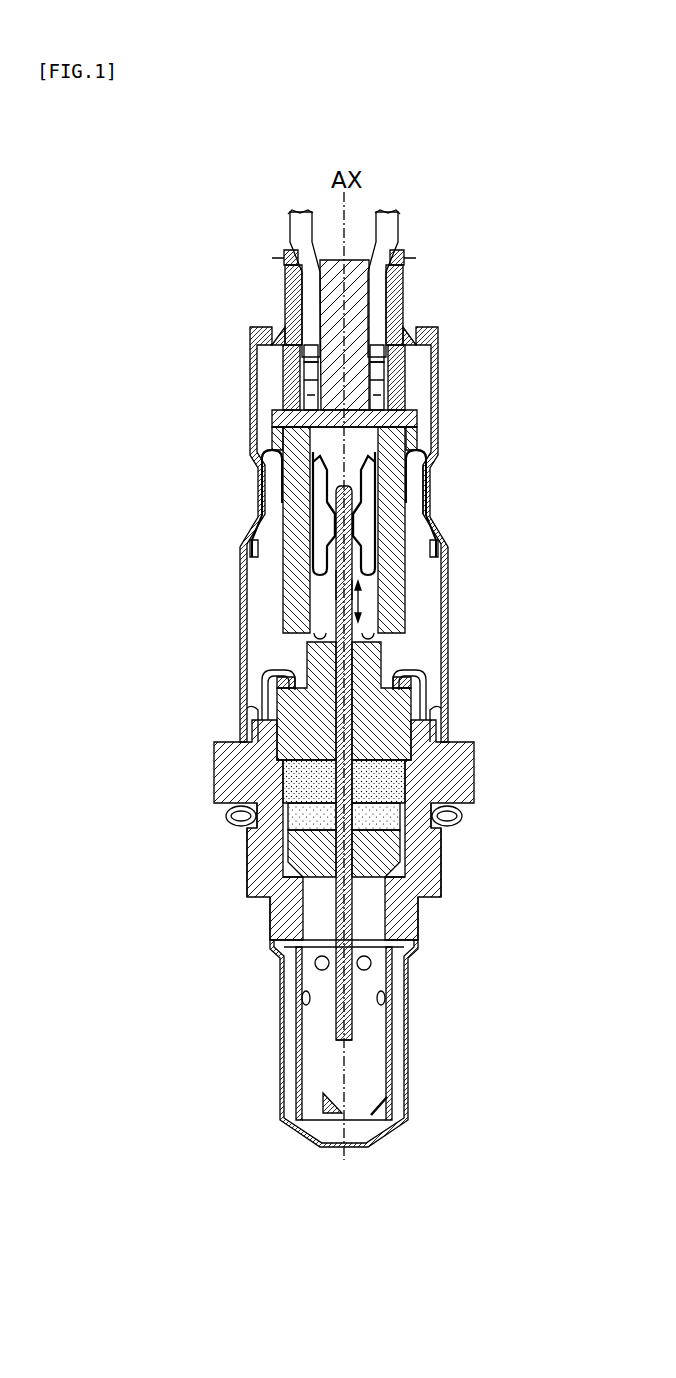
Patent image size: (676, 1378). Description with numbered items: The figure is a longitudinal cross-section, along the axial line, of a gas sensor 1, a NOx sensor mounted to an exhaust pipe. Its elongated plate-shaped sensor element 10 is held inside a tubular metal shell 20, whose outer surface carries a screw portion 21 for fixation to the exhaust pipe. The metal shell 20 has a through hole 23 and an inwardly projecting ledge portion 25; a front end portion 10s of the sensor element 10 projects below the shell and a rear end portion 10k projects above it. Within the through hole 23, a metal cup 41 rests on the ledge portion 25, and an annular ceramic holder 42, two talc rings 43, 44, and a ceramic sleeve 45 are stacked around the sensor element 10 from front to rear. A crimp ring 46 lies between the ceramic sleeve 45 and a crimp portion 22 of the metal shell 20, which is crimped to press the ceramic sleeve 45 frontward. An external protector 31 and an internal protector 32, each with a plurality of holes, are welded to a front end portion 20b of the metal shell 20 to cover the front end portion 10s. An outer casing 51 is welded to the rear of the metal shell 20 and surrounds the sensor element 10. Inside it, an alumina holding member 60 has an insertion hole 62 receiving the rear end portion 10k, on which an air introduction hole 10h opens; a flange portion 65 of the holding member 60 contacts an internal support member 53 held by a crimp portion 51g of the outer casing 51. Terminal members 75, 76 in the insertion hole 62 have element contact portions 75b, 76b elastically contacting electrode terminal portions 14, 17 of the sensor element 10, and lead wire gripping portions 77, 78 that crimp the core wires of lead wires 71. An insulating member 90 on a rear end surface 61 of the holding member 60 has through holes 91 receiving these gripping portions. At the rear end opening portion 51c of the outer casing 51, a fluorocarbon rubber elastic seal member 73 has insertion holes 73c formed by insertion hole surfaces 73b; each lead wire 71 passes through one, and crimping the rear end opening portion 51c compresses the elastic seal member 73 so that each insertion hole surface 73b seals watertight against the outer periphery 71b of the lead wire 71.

The gas sensor 1 is at (481, 222).
The sensor element 10 is at (245, 705).
The rear end portion 10k is at (335, 580).
The air introduction hole 10h is at (372, 596).
The front end portion 10s is at (336, 1032).
The electrode terminal portion 14 is at (330, 530).
The electrode terminal portion 17 is at (360, 532).
The metal shell 20 is at (236, 780).
The front end portion 20b is at (415, 912).
The screw portion 21 is at (258, 842).
The crimp portion 22 is at (400, 660).
The through hole 23 is at (278, 935).
The ledge portion 25 is at (262, 862).
The external protector 31 is at (408, 1010).
The internal protector 32 is at (392, 1068).
The metal cup 41 is at (295, 877).
The ceramic holder 42 is at (385, 855).
The talc ring 43 is at (390, 822).
The talc ring 44 is at (395, 780).
The ceramic sleeve 45 is at (395, 730).
The crimp ring 46 is at (420, 683).
The outer casing 51 is at (450, 612).
The rear end opening portion 51c is at (398, 285).
The crimp portion 51g is at (426, 480).
The internal support member 53 is at (272, 452).
The holding member 60 is at (395, 570).
The rear end surface 61 is at (417, 420).
The insertion hole 62 is at (366, 600).
The flange portion 65 is at (405, 440).
The lead wire 71 is at (300, 232).
The outer periphery 71b is at (302, 318).
The elastic seal member 73 is at (296, 292).
The insertion hole surface 73b is at (280, 340).
The insertion hole 73c is at (286, 262).
The terminal member 75 is at (283, 492).
The element contact portion 75b is at (262, 555).
The terminal member 76 is at (405, 472).
The element contact portion 76b is at (430, 552).
The lead wire gripping portion 77 is at (292, 368).
The lead wire gripping portion 78 is at (400, 375).
The insulating member 90 is at (380, 380).
The through hole 91 is at (312, 378).